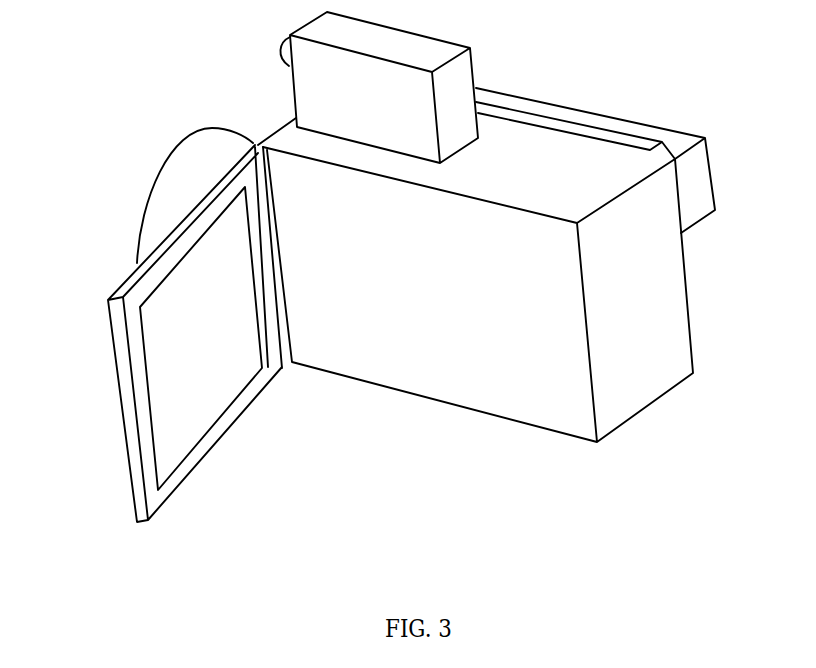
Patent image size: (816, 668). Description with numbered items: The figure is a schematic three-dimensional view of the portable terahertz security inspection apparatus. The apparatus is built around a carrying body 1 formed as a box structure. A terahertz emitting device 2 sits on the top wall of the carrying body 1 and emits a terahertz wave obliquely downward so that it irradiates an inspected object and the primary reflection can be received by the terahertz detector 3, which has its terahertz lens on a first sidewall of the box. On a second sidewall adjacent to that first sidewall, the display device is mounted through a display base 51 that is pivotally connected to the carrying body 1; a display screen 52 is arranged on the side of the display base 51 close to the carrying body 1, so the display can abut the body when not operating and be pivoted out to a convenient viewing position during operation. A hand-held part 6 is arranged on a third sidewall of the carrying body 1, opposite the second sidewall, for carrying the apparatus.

The carrying body 1 is at (505, 366).
The terahertz emitting device 2 is at (387, 80).
The terahertz detector 3 is at (176, 164).
The display base 51 is at (132, 327).
The display screen 52 is at (171, 398).
The hand-held part 6 is at (662, 128).